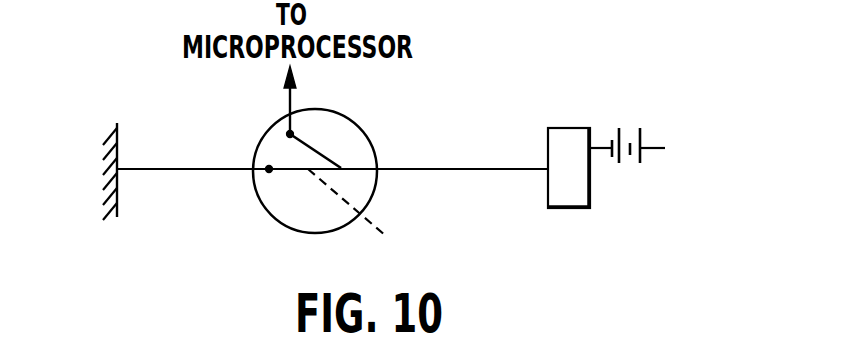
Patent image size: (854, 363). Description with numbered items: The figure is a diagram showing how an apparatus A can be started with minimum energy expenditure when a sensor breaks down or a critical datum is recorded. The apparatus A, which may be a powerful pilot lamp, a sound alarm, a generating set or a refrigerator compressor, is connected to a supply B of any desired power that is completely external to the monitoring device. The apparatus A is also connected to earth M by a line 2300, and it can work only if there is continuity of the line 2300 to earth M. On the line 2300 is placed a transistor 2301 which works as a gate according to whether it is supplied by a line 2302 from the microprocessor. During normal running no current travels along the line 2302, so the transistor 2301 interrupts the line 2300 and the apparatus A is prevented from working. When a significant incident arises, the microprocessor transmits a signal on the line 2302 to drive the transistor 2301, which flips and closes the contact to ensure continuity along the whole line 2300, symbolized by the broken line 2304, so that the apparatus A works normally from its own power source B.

The earth M is at (119, 137).
The line 2300 is at (508, 166).
The transistor 2301 is at (373, 141).
The line 2302 is at (290, 100).
The broken line 2304 is at (383, 211).
The apparatus A is at (567, 145).
The supply B is at (647, 142).